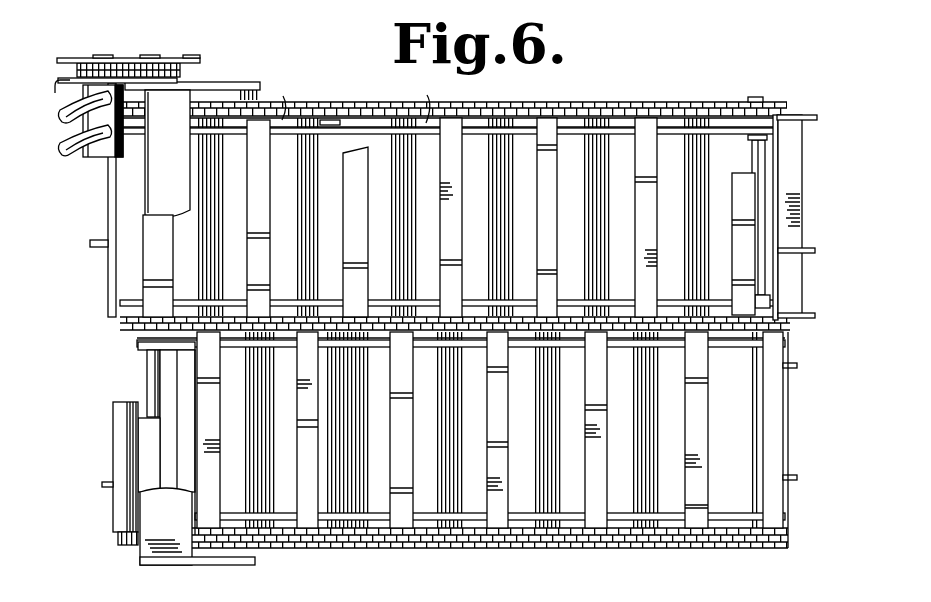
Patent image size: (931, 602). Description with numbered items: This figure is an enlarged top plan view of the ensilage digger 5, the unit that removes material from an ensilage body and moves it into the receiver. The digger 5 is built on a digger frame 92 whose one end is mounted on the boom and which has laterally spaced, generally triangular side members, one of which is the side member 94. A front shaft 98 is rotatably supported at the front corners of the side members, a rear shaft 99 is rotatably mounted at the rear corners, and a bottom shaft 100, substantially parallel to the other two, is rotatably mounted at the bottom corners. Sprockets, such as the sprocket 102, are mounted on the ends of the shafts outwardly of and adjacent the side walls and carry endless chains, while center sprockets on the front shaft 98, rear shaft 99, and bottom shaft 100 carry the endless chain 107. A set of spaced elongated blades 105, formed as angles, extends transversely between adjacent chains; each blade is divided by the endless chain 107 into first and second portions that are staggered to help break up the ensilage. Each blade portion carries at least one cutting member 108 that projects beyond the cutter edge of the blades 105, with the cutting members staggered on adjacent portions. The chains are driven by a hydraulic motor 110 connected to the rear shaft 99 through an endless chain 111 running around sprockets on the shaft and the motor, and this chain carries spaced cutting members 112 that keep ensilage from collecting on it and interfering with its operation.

The ensilage digger 5 is at (787, 103).
The digger frame 92 is at (140, 552).
The side member 94 is at (574, 106).
The front shaft 98 is at (755, 158).
The rear shaft 99 is at (150, 376).
The bottom shaft 100 is at (323, 493).
The sprocket 102 is at (337, 118).
The elongated blades 105 is at (660, 147).
The endless chain 107 is at (790, 325).
The cutting member 108 is at (812, 250).
The hydraulic motor 110 is at (97, 163).
The endless chain 111 is at (135, 58).
The cutting members 112 is at (195, 58).